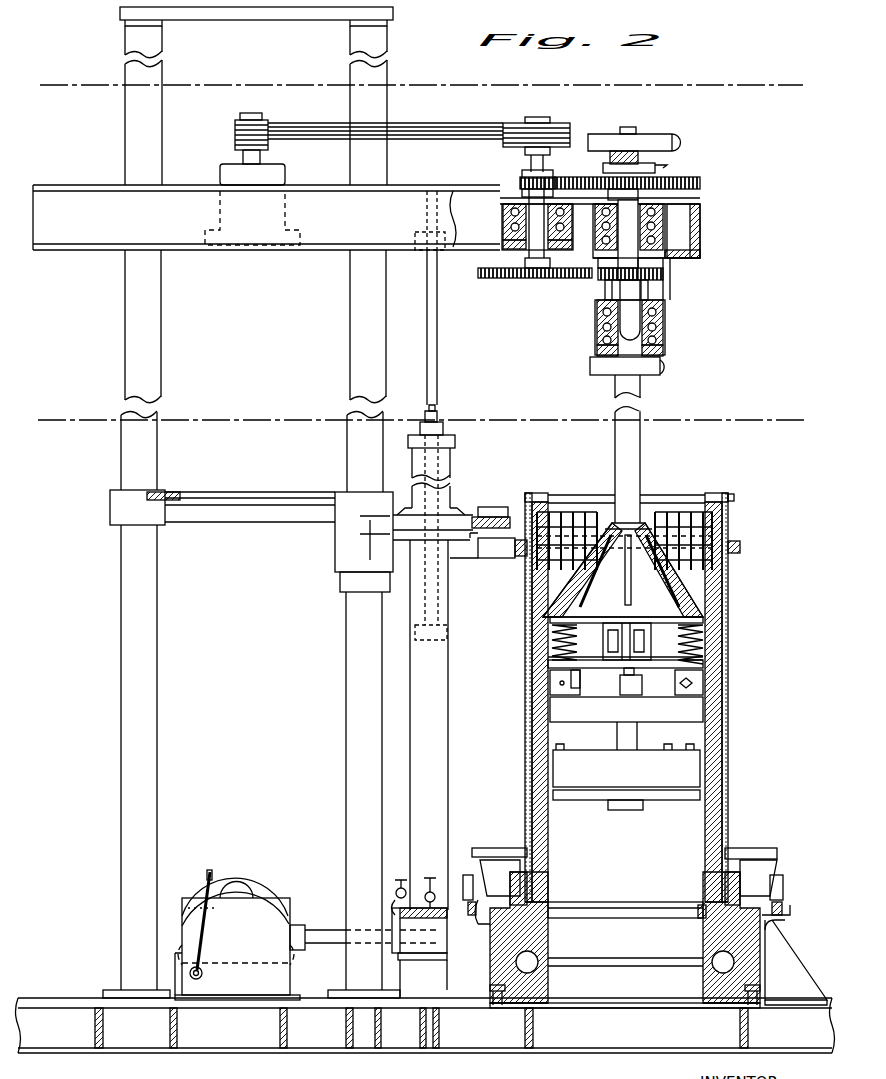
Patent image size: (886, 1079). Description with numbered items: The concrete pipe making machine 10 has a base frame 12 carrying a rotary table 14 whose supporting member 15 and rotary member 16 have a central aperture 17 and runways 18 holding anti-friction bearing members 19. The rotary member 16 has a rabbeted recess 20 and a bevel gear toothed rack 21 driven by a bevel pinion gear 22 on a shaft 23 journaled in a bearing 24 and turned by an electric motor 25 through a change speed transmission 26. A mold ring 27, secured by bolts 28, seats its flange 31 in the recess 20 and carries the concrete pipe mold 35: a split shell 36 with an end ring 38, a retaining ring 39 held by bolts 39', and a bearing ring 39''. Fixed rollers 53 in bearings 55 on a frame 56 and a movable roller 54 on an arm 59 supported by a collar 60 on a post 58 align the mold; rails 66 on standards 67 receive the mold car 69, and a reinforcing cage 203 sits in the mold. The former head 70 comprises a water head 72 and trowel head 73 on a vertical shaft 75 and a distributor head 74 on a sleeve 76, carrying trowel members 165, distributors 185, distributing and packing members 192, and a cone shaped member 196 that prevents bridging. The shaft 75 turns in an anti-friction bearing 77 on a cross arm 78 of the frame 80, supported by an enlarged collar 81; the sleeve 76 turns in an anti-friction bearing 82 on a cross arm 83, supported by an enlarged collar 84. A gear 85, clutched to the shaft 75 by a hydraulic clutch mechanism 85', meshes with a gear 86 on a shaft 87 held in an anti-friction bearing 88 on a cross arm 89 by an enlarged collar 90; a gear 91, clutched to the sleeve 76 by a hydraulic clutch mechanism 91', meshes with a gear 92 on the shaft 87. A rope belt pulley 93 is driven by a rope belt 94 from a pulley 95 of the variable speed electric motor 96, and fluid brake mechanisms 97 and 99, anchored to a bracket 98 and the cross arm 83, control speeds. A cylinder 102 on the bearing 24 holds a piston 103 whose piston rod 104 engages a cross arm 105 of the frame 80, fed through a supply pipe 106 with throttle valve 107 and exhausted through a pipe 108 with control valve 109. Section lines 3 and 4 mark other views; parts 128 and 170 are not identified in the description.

The section line 3- 3 is at (40, 82).
The section line 4- 4 is at (38, 418).
The machine frame 10 is at (395, 94).
The base 12 is at (210, 1053).
The bearing support 14 is at (700, 993).
The bearing pedestal 15 is at (713, 1008).
The ball bearing 16 is at (742, 958).
The bearing pedestal 17 is at (553, 1003).
The bearing housing 18 is at (540, 936).
The ball bearing 19 is at (537, 960).
The turntable plate 20 is at (710, 926).
The bracket 21 is at (778, 928).
The bracket 22 is at (488, 957).
The motor shaft 23 is at (315, 930).
The gear box 24 is at (400, 938).
The hand lever 25 is at (210, 853).
The motor 26 is at (270, 900).
The clamp 27 is at (765, 882).
The clamp block 28 is at (770, 905).
The ring 31 is at (703, 916).
The vessel 35 is at (732, 735).
The vessel bottom 36 is at (728, 818).
The plate 38 is at (549, 894).
The vessel rim 39 is at (631, 487).
The rim bolt 39' is at (749, 491).
The rim lug 39'' is at (750, 536).
The clamp block 53 is at (490, 548).
The level line 54 is at (730, 565).
The clamp nut 55 is at (495, 507).
The coupling 56 is at (462, 517).
The frame columns 58 is at (122, 622).
The bore 59 is at (405, 562).
The arm 60 is at (340, 582).
The bracket 66 is at (782, 916).
The brace 67 is at (800, 965).
The plate 69 is at (763, 848).
The bottom block 70 is at (632, 814).
The block 72 is at (690, 768).
The plate 73 is at (690, 710).
The plate 74 is at (705, 664).
The shaft end 75 is at (632, 128).
The drive shaft 76 is at (615, 443).
The housing 77 is at (665, 211).
The housing wall 78 is at (665, 239).
The cross beam 80 is at (324, 246).
The hub 81 is at (640, 187).
The bearing housing 82 is at (666, 322).
The bearing ring 83 is at (658, 355).
The collar 84 is at (649, 293).
The gear 85 is at (646, 182).
The clutch plate 85' is at (610, 168).
The pinion 86 is at (520, 181).
The shaft 87 is at (531, 162).
The bearing 88 is at (505, 212).
The bearing 89 is at (505, 233).
The hub 90 is at (522, 193).
The gear 91 is at (654, 279).
The hub 91' is at (590, 287).
The gear 92 is at (500, 279).
The gear 93 is at (513, 123).
The drive shaft 94 is at (430, 123).
The gear 95 is at (240, 118).
The bearing block 96 is at (222, 172).
The lever 97 is at (605, 136).
The pin 98 is at (640, 158).
The plate 99 is at (592, 367).
The cylinder 102 is at (448, 736).
The piston rod 103 is at (447, 644).
The rod 104 is at (437, 367).
The guide 105 is at (418, 236).
The pipe 106 is at (432, 905).
The valve 107 is at (428, 880).
The valve 108 is at (396, 893).
The pipe 109 is at (390, 906).
The plate 128 is at (705, 796).
The block 165 is at (700, 690).
The catch 170 is at (636, 690).
The slot 185 is at (612, 630).
The spring 192 is at (708, 622).
The cone 196 is at (720, 591).
The basket 203 is at (553, 515).